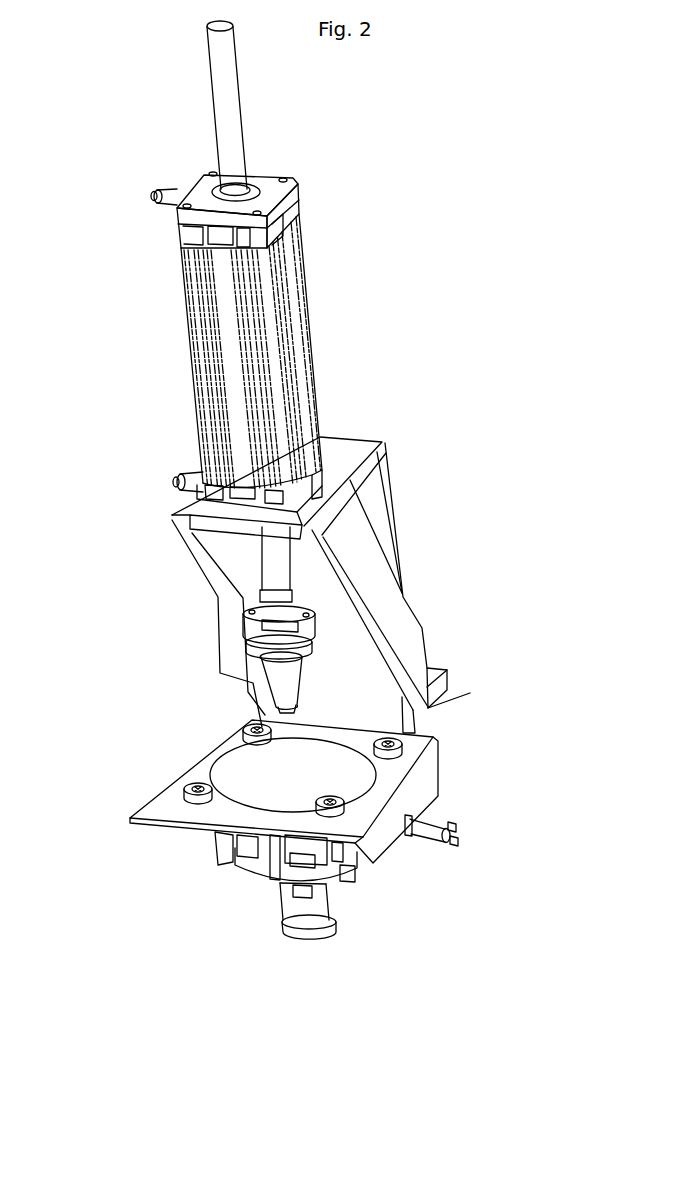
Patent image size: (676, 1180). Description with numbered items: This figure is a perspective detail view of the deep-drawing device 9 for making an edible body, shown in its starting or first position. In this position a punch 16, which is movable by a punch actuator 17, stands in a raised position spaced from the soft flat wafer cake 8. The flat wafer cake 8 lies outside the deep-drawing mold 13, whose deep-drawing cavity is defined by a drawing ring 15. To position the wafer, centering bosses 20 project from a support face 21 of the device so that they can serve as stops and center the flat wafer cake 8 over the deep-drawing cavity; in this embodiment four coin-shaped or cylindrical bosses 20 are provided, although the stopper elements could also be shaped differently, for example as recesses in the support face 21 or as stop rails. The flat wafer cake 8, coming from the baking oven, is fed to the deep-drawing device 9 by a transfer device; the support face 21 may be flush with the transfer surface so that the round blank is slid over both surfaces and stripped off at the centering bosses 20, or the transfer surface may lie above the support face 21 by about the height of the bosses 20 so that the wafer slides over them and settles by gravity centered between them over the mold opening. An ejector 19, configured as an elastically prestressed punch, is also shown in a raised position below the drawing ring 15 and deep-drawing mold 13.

The flat wafer cake 8 is at (362, 768).
The deep-drawing device 9 is at (332, 231).
The deep-drawing mold 13 is at (172, 810).
The drawing ring 15 is at (230, 817).
The punch 16 is at (274, 662).
The punch actuator 17 is at (232, 352).
The ejector 19 is at (290, 908).
The centering bosses 20 is at (240, 733).
The support face 21 is at (375, 803).